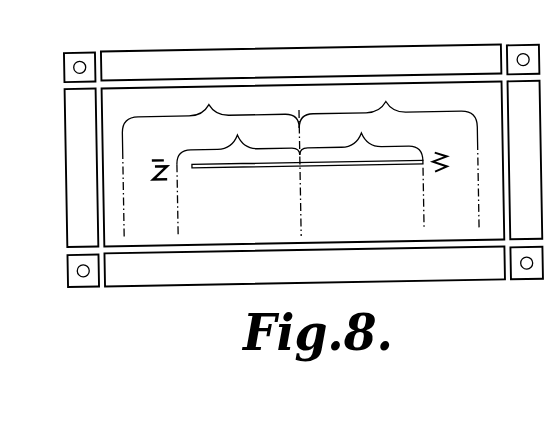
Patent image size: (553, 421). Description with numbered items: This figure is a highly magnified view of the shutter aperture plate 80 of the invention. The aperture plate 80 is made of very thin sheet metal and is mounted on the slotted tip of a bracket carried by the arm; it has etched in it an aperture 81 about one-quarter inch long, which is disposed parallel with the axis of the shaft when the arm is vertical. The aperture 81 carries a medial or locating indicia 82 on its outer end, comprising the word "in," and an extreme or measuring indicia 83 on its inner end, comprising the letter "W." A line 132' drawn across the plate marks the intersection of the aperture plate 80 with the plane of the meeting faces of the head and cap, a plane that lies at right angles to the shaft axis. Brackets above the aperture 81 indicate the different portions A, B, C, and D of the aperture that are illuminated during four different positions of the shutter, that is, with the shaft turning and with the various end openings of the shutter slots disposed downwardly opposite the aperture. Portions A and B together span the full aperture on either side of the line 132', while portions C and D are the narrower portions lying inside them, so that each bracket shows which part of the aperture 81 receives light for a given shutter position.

The aperture plate 80 is at (330, 48).
The aperture 81 is at (256, 168).
The medial or locating indicia 82 is at (165, 180).
The extreme or measuring indicia 83 is at (440, 176).
The line 132' is at (333, 172).
The portion of the aperture A is at (212, 163).
The portion of the aperture B is at (389, 158).
The portion of the aperture C is at (238, 178).
The portion of the aperture D is at (361, 174).